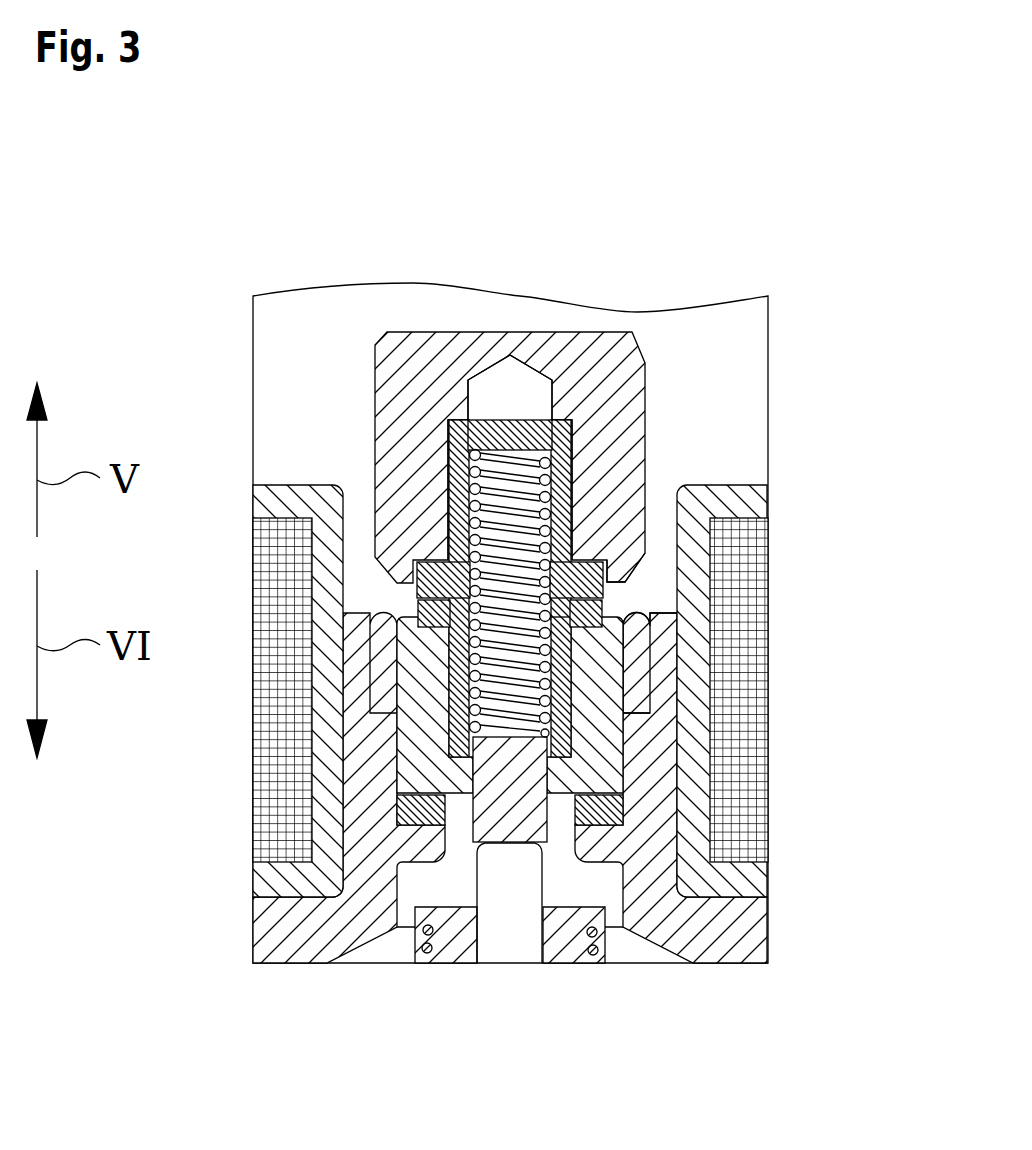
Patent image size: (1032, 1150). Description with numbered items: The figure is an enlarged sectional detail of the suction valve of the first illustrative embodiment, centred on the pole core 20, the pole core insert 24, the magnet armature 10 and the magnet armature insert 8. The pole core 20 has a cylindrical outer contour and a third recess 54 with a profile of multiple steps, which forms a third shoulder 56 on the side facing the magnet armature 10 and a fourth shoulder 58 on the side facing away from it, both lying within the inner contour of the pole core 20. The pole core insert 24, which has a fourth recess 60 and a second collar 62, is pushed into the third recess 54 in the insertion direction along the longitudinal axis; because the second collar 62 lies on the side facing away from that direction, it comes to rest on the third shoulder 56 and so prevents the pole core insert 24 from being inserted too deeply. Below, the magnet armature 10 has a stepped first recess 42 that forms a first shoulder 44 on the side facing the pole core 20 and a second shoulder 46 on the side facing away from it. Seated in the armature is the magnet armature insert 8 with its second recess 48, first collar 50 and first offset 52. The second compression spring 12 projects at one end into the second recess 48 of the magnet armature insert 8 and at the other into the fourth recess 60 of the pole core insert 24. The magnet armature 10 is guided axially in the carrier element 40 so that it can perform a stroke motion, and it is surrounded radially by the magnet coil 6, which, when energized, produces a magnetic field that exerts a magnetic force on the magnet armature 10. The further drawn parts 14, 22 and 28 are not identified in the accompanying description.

The magnet coil 6 is at (263, 700).
The magnet armature insert 8 is at (545, 825).
The magnet armature 10 is at (425, 750).
The second compression spring 12 is at (455, 465).
The valve seat bore / outlet 14 is at (504, 950).
The pole core 20 is at (417, 362).
The solenoid valve 22 is at (800, 245).
The pole core insert 24 is at (556, 436).
The stop flange 28 is at (612, 595).
The carrier element 40 is at (730, 933).
The first recess 42 is at (565, 720).
The first shoulder 44 is at (625, 658).
The second shoulder 46 is at (621, 791).
The second recess 48 is at (625, 675).
The first collar 50 is at (414, 603).
The first offset 52 is at (443, 793).
The third recess 54 is at (556, 490).
The third shoulder 56 is at (581, 545).
The fourth shoulder 58 is at (563, 416).
The fourth recess 60 is at (603, 536).
The second collar 62 is at (414, 573).